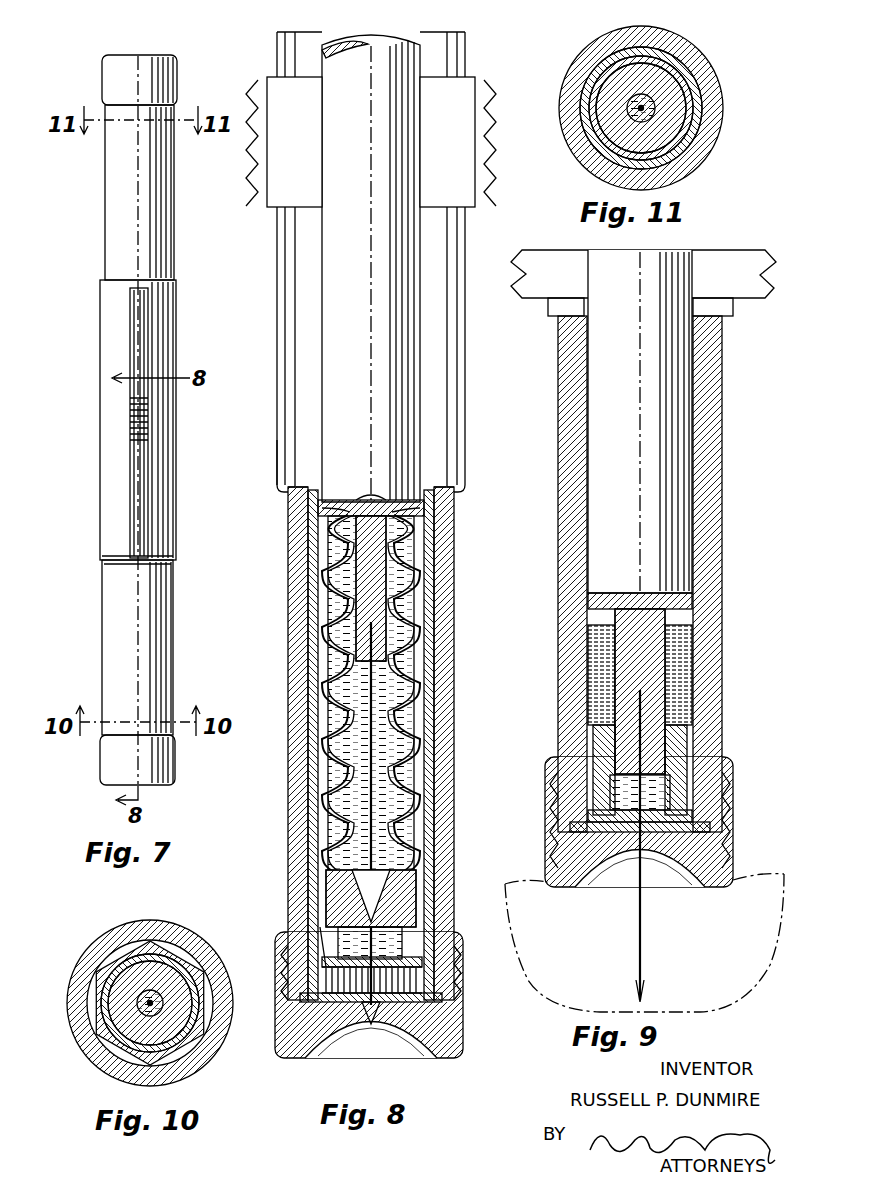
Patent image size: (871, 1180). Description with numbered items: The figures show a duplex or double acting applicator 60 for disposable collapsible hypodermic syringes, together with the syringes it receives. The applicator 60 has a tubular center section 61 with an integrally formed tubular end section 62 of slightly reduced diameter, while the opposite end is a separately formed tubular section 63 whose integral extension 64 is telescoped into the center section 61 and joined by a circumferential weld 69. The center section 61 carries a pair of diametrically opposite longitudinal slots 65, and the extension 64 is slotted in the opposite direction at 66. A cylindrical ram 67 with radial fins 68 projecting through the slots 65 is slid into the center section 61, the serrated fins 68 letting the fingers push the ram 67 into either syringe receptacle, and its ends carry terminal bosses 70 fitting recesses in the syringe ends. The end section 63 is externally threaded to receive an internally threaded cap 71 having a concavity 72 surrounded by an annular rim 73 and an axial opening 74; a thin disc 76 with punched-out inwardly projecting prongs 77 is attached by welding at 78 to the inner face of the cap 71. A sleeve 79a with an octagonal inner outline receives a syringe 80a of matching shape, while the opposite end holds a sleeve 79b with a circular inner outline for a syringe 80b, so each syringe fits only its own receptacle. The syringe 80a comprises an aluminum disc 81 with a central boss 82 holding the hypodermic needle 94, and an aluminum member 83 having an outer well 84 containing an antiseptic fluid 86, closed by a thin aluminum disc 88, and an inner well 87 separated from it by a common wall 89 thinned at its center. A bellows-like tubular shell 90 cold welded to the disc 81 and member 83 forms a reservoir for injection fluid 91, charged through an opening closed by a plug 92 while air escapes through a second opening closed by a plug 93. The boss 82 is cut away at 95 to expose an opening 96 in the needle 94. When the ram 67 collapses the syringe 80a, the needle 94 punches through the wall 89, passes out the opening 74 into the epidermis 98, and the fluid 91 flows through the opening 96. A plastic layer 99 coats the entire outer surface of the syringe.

In FIG. 7, the applicator 60 is at (138, 420).
In FIG. 7, the tubular center section 61 is at (108, 394).
In FIG. 7, the tubular end section 62 is at (180, 242).
In FIG. 11, the tubular end section 62 is at (712, 130).
In FIG. 7, the tubular section 63 is at (108, 655).
In FIG. 10, the tubular section 63 is at (122, 933).
In FIG. 8, the extension 64 is at (277, 287).
In FIG. 7, the longitudinal slots 65 is at (95, 423).
In FIG. 8, the longitudinal slots 65 is at (280, 456).
In FIG. 7, the slots 66 is at (134, 488).
In FIG. 8, the slots 66 is at (295, 350).
In FIG. 7, the cylindrical ram 67 is at (134, 516).
In FIG. 8, the cylindrical ram 67 is at (372, 336).
In FIG. 9, the cylindrical ram 67 is at (640, 436).
In FIG. 7, the fins 68 is at (148, 430).
In FIG. 8, the fins 68 is at (272, 96).
In FIG. 9, the fins 68 is at (546, 290).
In FIG. 7, the circumferential weld 69 is at (104, 560).
In FIG. 8, the circumferential weld 69 is at (460, 502).
In FIG. 9, the circumferential weld 69 is at (725, 318).
In FIG. 8, the terminal bosses 70 is at (368, 500).
In FIG. 9, the terminal bosses 70 is at (640, 601).
In FIG. 8, the internally threaded cap 71 is at (466, 1028).
In FIG. 9, the internally threaded cap 71 is at (639, 822).
In FIG. 8, the concavity 72 is at (420, 1050).
In FIG. 8, the annular rim 73 is at (292, 1062).
In FIG. 8, the axial opening 74 is at (380, 1040).
In FIG. 8, the thin disc 76 is at (440, 1000).
In FIG. 9, the thin disc 76 is at (640, 827).
In FIG. 8, the inwardly projecting prongs 77 is at (440, 985).
In FIG. 9, the inwardly projecting prongs 77 is at (640, 675).
In FIG. 8, the welding 78 is at (366, 1024).
In FIG. 8, the sleeve 79a is at (300, 798).
In FIG. 10, the sleeve 79a is at (188, 940).
In FIG. 9, the sleeve 79b is at (640, 592).
In FIG. 11, the sleeve 79b is at (700, 70).
In FIG. 8, the syringe 80a is at (438, 830).
In FIG. 10, the syringe 80a is at (102, 990).
In FIG. 9, the syringe 80b is at (640, 770).
In FIG. 11, the syringe 80b is at (700, 96).
In FIG. 8, the aluminum disc 81 is at (376, 500).
In FIG. 8, the central boss 82 is at (430, 610).
In FIG. 9, the central boss 82 is at (640, 691).
In FIG. 8, the aluminum member 83 is at (296, 870).
In FIG. 8, the well 84 is at (404, 948).
In FIG. 9, the well 84 is at (640, 792).
In FIG. 8, the antiseptic fluid 86 is at (424, 930).
In FIG. 9, the antiseptic fluid 86 is at (640, 816).
In FIG. 8, the well 87 is at (388, 900).
In FIG. 8, the thin aluminum disc 88 is at (318, 945).
In FIG. 8, the common wall 89 is at (352, 898).
In FIG. 8, the bellows-like tubular shell 90 is at (416, 735).
In FIG. 8, the injection fluid 91 is at (420, 680).
In FIG. 8, the plug 92 is at (330, 526).
In FIG. 8, the plug 93 is at (430, 528).
In FIG. 8, the hypodermic needle 94 is at (374, 806).
In FIG. 9, the hypodermic needle 94 is at (640, 846).
In FIG. 10, the hypodermic needle 94 is at (140, 1012).
In FIG. 11, the hypodermic needle 94 is at (630, 115).
In FIG. 8, the cut away 95 is at (338, 630).
In FIG. 8, the opening 96 is at (334, 648).
In FIG. 9, the epidermis 98 is at (668, 888).
In FIG. 10, the layer 99 is at (90, 1068).